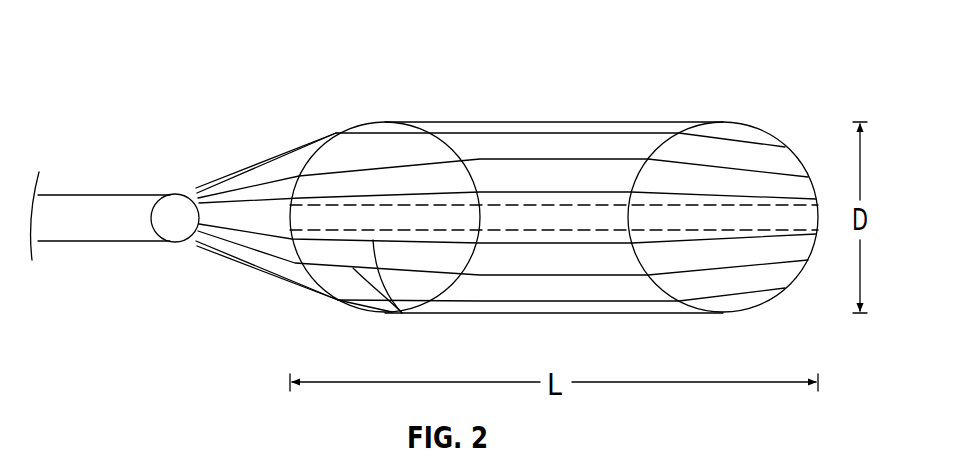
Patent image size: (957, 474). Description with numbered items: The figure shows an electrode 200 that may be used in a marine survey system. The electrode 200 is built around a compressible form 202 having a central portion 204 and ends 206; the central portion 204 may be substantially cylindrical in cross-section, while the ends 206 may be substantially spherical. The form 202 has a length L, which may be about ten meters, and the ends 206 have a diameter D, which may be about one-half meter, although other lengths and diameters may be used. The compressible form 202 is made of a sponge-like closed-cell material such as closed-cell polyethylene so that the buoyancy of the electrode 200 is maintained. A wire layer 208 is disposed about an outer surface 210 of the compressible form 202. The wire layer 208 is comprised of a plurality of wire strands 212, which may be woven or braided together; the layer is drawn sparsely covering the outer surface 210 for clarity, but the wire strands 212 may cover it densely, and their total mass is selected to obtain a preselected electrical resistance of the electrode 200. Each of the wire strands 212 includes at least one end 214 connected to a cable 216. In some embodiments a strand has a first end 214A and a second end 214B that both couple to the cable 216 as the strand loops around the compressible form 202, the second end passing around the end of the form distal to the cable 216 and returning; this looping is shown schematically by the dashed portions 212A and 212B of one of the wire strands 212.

The electrode 200 is at (306, 49).
The compressible form 202 is at (761, 131).
The central portion 204 is at (545, 321).
The ends 206 is at (329, 126).
The wire layer 208 is at (517, 262).
The outer surface 210 is at (476, 117).
The wire strands 212 is at (342, 298).
The portion of wire strand 212A is at (605, 190).
The portion of wire strand 212B is at (663, 205).
The end of wire strand 214 is at (178, 194).
The first end 214A is at (201, 194).
The second end 214B is at (207, 216).
The cable 216 is at (107, 192).